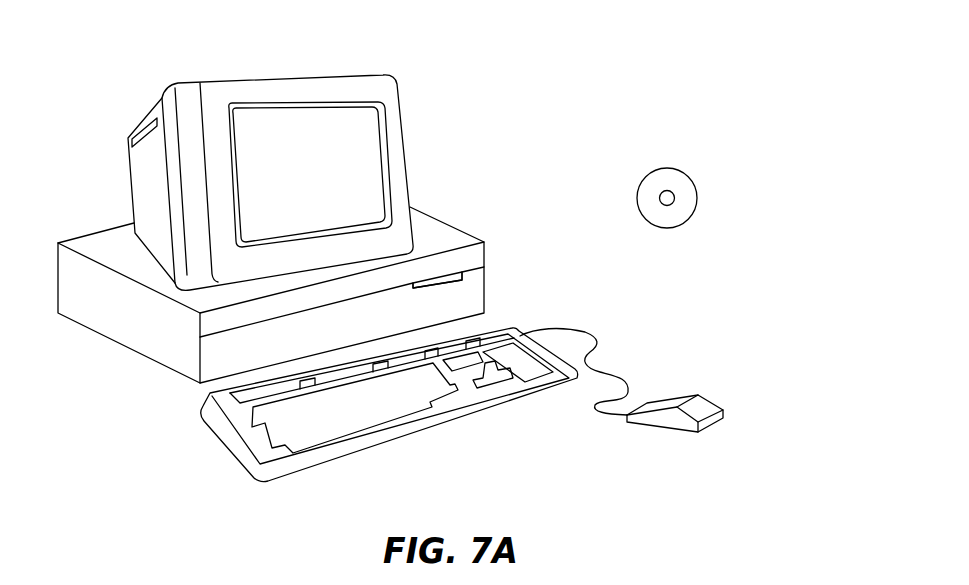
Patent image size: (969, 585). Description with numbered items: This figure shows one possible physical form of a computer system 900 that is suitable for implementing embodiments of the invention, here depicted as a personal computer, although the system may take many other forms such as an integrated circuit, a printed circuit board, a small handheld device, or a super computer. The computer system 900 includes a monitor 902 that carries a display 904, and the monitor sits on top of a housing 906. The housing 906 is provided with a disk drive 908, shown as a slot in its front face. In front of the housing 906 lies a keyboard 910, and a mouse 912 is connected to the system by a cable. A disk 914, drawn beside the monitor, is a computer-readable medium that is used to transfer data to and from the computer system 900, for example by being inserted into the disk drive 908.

The computer system 900 is at (601, 55).
The monitor 902 is at (413, 168).
The display 904 is at (368, 137).
The housing 906 is at (167, 368).
The disk drive 908 is at (462, 272).
The keyboard 910 is at (393, 440).
The mouse 912 is at (712, 402).
The disk 914 is at (678, 168).